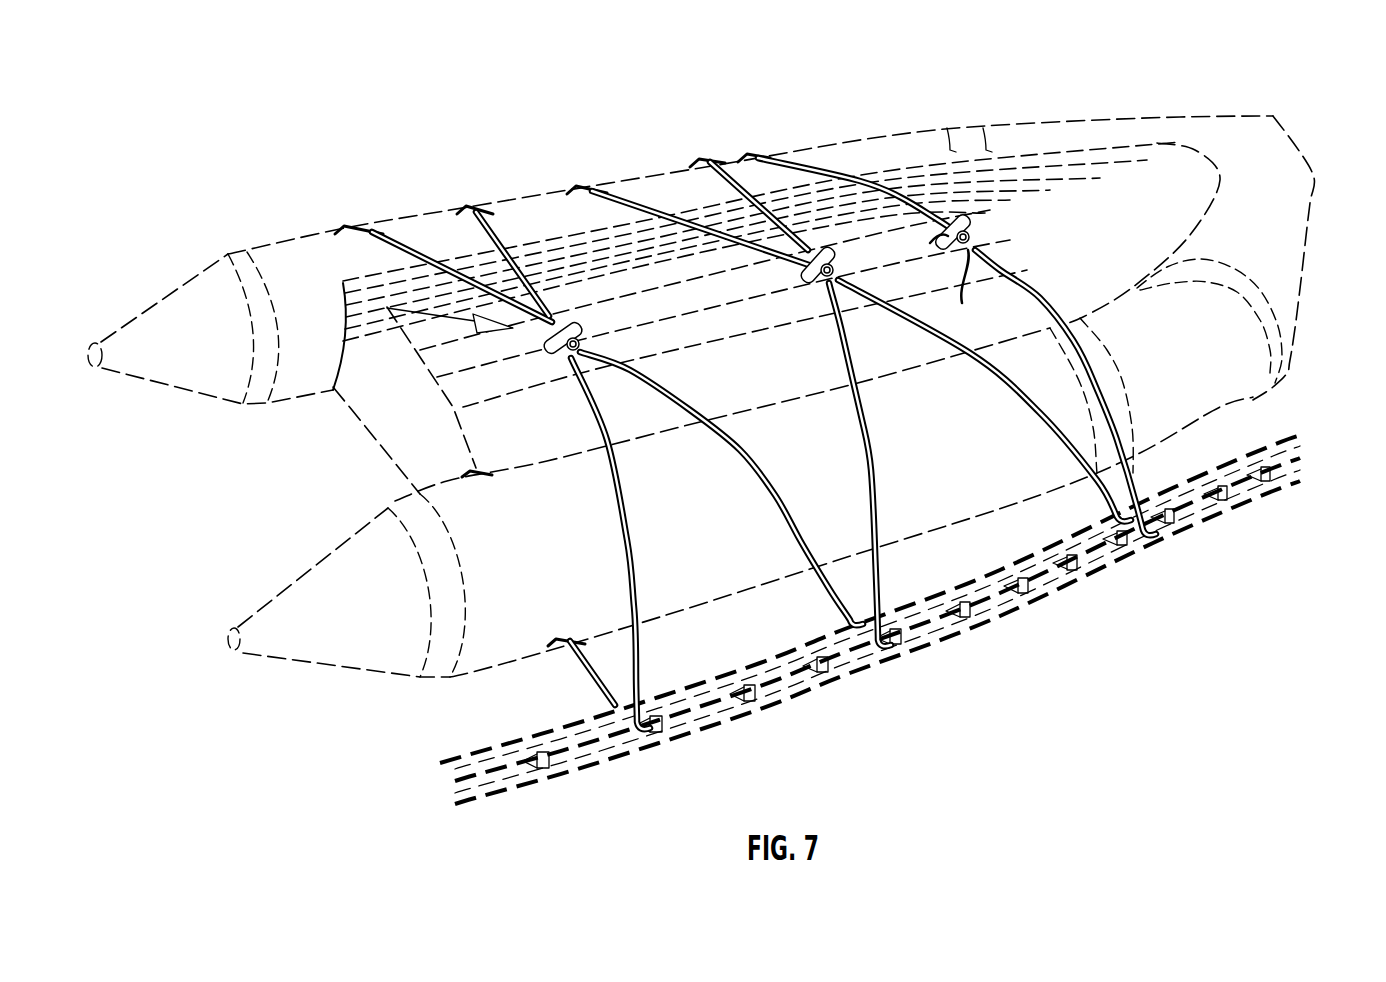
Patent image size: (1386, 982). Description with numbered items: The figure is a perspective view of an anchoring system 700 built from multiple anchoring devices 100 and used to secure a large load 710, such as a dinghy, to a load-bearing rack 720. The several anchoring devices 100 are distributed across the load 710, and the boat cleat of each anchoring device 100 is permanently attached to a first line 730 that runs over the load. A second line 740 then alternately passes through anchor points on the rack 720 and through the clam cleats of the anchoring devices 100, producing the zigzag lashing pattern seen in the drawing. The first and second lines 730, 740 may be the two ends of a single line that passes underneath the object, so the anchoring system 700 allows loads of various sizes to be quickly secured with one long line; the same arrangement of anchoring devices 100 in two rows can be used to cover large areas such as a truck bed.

The anchoring device 100 is at (960, 230).
The anchoring system 700 is at (347, 287).
The large load 710 is at (1222, 400).
The load-bearing rack 720 is at (1113, 567).
The first line 730 is at (800, 157).
The second line 740 is at (880, 557).